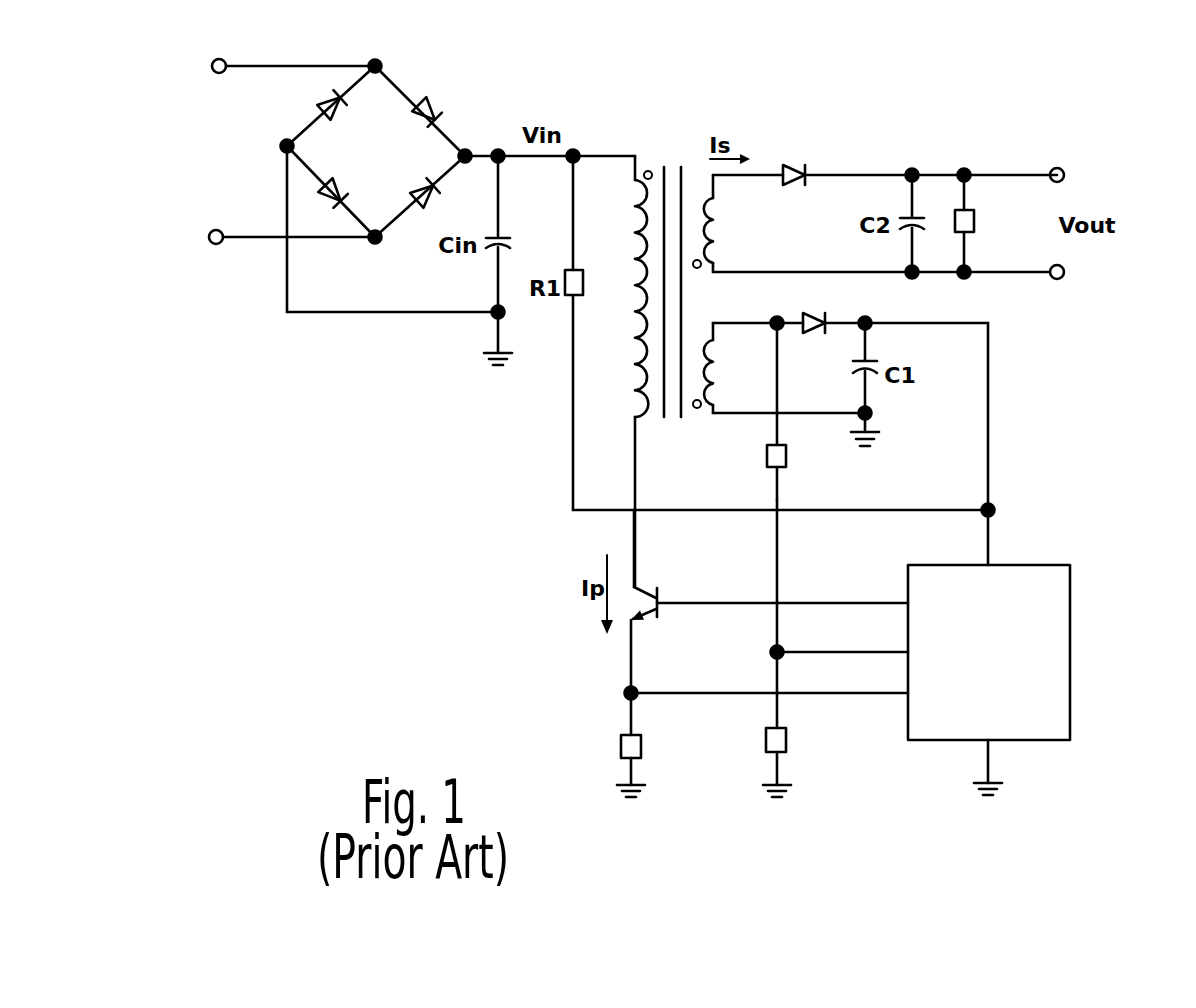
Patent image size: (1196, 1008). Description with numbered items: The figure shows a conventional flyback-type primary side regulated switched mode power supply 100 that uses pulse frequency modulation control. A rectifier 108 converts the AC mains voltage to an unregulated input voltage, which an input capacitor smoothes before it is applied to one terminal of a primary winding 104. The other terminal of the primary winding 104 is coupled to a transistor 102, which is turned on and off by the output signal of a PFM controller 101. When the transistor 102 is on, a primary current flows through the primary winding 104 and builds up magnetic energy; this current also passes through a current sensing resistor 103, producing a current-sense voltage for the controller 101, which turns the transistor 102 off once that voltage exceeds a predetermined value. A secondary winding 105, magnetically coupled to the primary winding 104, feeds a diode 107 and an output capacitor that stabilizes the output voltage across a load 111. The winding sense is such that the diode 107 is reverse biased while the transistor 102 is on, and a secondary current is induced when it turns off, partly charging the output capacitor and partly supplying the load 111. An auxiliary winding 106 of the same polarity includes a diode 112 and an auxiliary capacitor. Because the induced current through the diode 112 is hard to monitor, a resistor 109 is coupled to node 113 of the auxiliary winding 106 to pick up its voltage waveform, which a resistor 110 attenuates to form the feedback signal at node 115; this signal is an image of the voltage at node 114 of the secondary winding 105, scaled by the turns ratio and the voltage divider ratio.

The flyback power converter (prior art) 100 is at (1050, 98).
The PFM controller 101 is at (1080, 665).
The transistor 102 is at (645, 577).
The current sensing resistor 103 is at (650, 742).
The primary winding 104 is at (622, 325).
The secondary winding 105 is at (720, 222).
The auxiliary winding 106 is at (713, 370).
The diode 107 is at (797, 158).
The rectifier 108 is at (432, 70).
The resistor 109 is at (755, 455).
The resistor 110 is at (792, 740).
The load 111 is at (991, 223).
The diode 112 is at (812, 312).
The node 113 is at (759, 310).
The node 114 is at (758, 175).
The node 115 is at (840, 641).